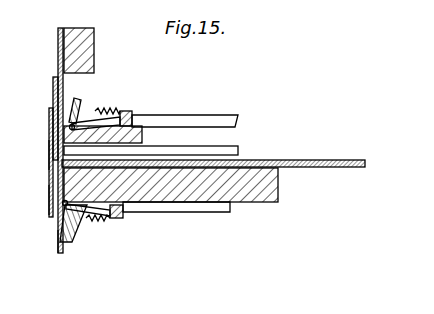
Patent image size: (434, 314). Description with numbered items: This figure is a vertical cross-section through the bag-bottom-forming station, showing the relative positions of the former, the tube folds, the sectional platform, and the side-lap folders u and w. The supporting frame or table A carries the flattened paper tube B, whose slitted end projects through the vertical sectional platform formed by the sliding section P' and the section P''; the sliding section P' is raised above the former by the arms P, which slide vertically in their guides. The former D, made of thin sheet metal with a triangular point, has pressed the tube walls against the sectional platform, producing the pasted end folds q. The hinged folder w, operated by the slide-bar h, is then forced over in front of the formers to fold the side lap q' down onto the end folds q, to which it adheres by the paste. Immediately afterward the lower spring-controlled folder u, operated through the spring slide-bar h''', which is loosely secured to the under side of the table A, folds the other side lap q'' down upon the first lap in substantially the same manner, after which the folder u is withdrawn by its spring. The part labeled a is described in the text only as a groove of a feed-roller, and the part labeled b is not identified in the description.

The arms P is at (91, 50).
The sliding section of the sectional platform P' is at (48, 140).
The section of the sectional platform P'' is at (32, 200).
The end folds q is at (37, 155).
The side lap q' is at (45, 114).
The other side lap q'' is at (44, 243).
The former D is at (50, 109).
The hinged folder w is at (80, 103).
The groove a is at (122, 88).
The slide-bar h is at (196, 117).
The flattened paper tube B is at (328, 159).
The supporting frame or table A is at (279, 183).
The spring slide-bar h''' is at (176, 220).
The lower folder u is at (75, 228).
The lower spring stop block b is at (105, 220).